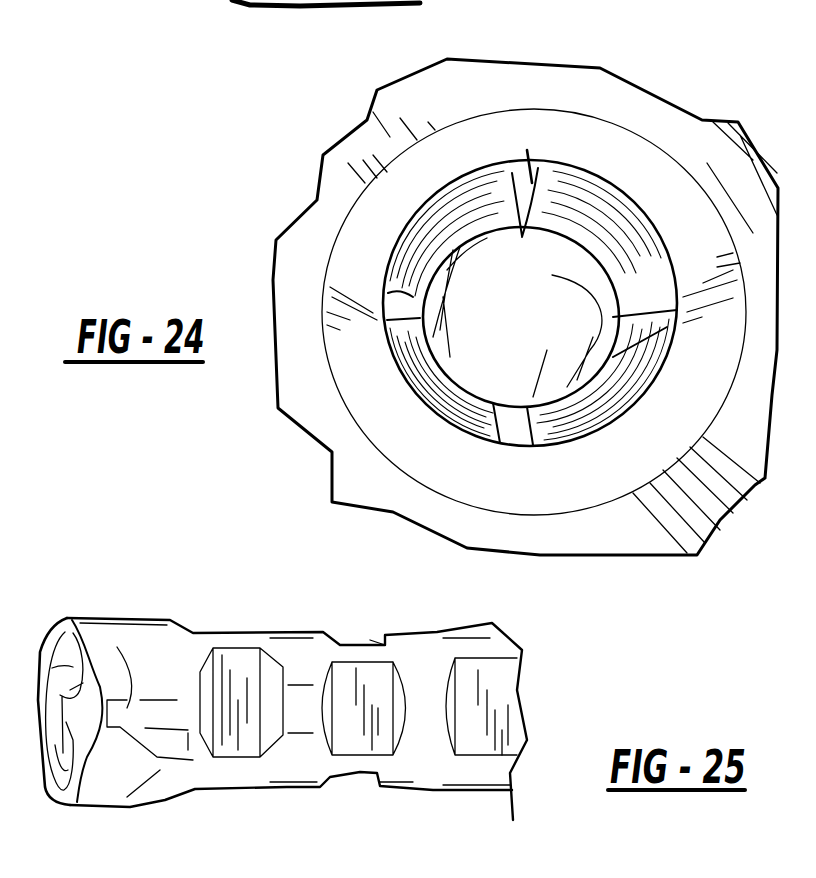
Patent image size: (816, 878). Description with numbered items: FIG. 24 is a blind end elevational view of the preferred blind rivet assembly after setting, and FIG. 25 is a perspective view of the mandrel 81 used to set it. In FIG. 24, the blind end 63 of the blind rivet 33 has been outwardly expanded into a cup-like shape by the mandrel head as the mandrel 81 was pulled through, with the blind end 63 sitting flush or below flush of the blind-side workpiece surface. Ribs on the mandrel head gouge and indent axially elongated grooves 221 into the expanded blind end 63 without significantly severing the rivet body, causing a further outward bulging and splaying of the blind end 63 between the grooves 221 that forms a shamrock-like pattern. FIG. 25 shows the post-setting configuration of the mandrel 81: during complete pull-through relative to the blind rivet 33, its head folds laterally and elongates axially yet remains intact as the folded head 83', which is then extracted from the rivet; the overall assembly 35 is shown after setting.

In FIG. 24, the axially elongated grooves 221 is at (532, 180).
In FIG. 24, the blind rivet 33 is at (573, 258).
In FIG. 24, the blind end 63 is at (420, 208).
In FIG. 25, the folded mandrel head 83' is at (70, 652).
In FIG. 25, the mandrel 81 is at (300, 648).
In FIG. 25, the armature assembly 35 is at (545, 673).